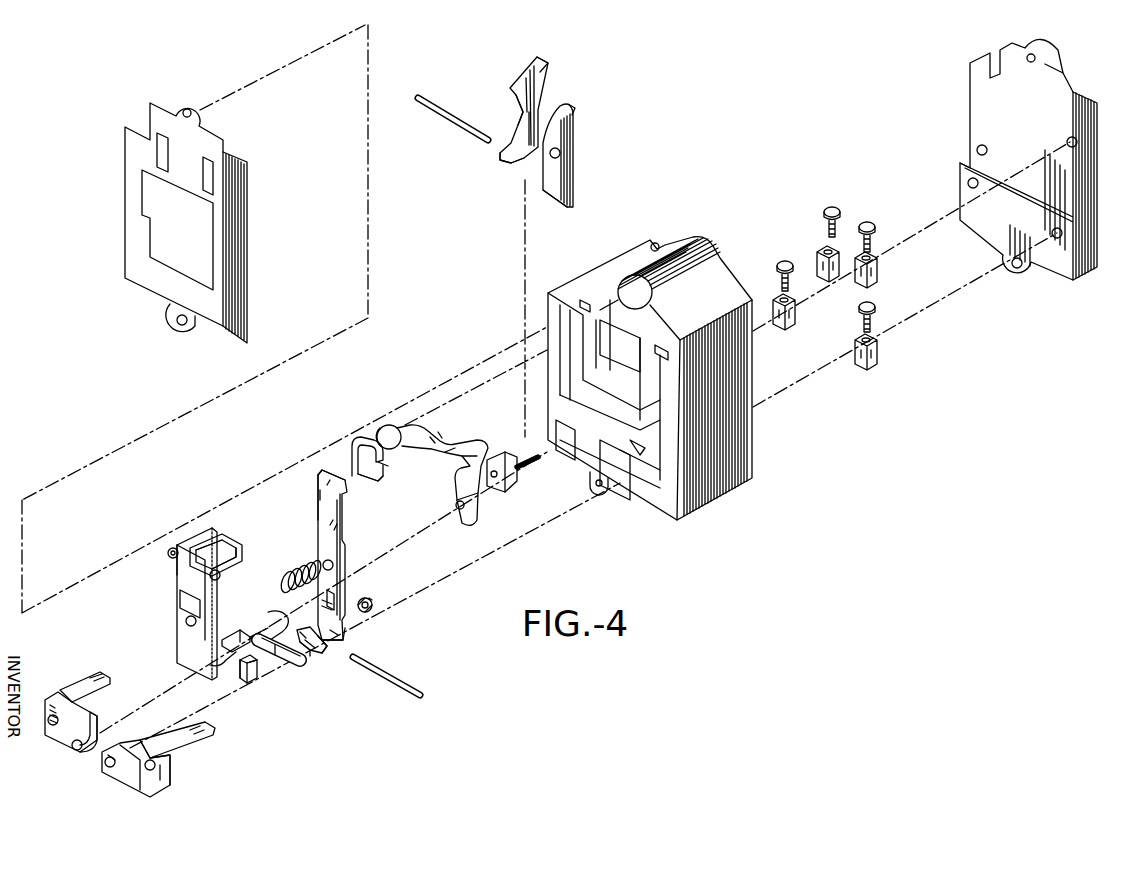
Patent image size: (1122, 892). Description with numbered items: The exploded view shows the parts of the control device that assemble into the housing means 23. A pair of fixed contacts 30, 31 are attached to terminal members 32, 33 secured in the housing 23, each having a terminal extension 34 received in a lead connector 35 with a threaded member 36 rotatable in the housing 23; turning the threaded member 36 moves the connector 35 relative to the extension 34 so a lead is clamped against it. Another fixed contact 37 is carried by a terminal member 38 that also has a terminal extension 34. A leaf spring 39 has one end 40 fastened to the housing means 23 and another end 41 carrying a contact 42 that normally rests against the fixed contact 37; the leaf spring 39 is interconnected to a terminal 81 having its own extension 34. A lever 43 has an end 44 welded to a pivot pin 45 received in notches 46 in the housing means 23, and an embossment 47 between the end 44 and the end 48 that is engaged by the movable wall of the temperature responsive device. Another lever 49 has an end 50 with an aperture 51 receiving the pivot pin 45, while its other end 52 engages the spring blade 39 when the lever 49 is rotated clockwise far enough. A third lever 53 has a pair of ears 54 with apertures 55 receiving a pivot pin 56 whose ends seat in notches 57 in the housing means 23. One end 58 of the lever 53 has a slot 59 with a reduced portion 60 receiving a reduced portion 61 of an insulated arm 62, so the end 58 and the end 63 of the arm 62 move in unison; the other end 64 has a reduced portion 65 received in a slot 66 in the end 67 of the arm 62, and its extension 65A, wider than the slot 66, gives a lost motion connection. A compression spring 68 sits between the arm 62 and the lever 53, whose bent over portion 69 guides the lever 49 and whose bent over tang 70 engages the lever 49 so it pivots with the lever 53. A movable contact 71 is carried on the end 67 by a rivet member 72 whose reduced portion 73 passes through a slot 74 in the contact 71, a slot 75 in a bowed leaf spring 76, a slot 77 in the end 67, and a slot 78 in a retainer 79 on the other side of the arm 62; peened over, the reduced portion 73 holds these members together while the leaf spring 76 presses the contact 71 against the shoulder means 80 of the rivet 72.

The housing means 23 is at (663, 387).
The fixed contact 30 is at (93, 733).
The fixed contact 31 is at (149, 759).
The terminal member 32 is at (79, 696).
The terminal member 33 is at (170, 768).
The terminal extension 34 is at (112, 680).
The lead connector 35 is at (797, 312).
The threaded member 36 is at (832, 207).
The fixed contact 37 is at (364, 451).
The terminal member 38 is at (360, 486).
The leaf spring 39 is at (442, 484).
The end 40 is at (473, 522).
The end 41 is at (397, 401).
The contact 42 is at (387, 425).
The lever 43 is at (555, 165).
The end 44 is at (553, 203).
The pivot pin 45 is at (440, 112).
The notches 46 is at (638, 450).
The embossment 47 is at (550, 157).
The end 48 is at (574, 112).
The lever 49 is at (522, 91).
The end 50 is at (497, 158).
The aperture 51 is at (514, 147).
The end 52 is at (541, 60).
The third lever 53 is at (197, 574).
The ears 54 is at (172, 547).
The apertures 55 is at (178, 552).
The pivot pin 56 is at (381, 670).
The notches 57 is at (584, 303).
The end 58 is at (215, 540).
The slot 59 is at (207, 545).
The reduced portion 60 is at (232, 549).
The reduced portion 61 is at (318, 480).
The insulated arm 62 is at (333, 535).
The end 63 is at (320, 478).
The end 64 is at (240, 633).
The reduced portion 65 is at (226, 660).
The extension 65A is at (272, 602).
The slot 66 is at (335, 595).
The end 67 is at (318, 612).
The compression spring 68 is at (300, 570).
The bent over portion 69 is at (182, 600).
The bent over tang 70 is at (178, 575).
The movable contact 71 is at (300, 665).
The rivet member 72 is at (245, 682).
The reduced portion 73 is at (255, 668).
The slot 74 is at (282, 642).
The slot 75 is at (305, 658).
The bowed leaf spring 76 is at (322, 652).
The slot 77 is at (340, 632).
The slot 78 is at (384, 587).
The retainer 79 is at (369, 600).
The shoulder means 80 is at (250, 680).
The terminal 81 is at (511, 492).